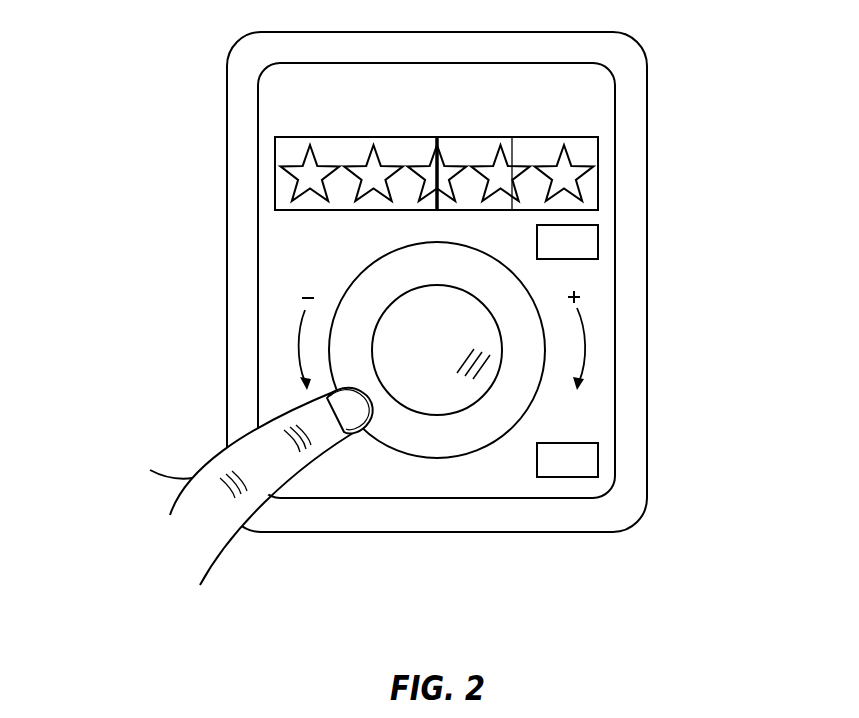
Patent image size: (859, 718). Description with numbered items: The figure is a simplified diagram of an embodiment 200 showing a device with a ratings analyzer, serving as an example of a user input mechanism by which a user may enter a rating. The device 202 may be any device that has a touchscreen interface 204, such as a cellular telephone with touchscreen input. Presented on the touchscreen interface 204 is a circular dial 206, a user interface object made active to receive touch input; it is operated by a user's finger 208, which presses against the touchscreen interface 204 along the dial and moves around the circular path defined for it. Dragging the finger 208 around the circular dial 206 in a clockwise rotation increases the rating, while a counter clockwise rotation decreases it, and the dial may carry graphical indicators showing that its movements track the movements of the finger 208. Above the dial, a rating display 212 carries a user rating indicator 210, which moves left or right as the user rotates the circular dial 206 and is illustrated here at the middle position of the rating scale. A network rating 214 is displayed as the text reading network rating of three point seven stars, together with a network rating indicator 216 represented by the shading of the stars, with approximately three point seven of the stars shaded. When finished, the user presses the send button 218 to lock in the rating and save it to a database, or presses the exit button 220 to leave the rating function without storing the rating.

The embodiment 200 is at (612, 550).
The device 202 is at (373, 532).
The touchscreen interface 204 is at (722, 377).
The circular dial 206 is at (352, 279).
The user's finger 208 is at (198, 480).
The user rating indicator 210 is at (438, 138).
The rating display 212 is at (600, 187).
The network rating 214 is at (290, 95).
The network rating indicator 216 is at (512, 160).
The send button 218 is at (598, 240).
The exit button 220 is at (598, 458).